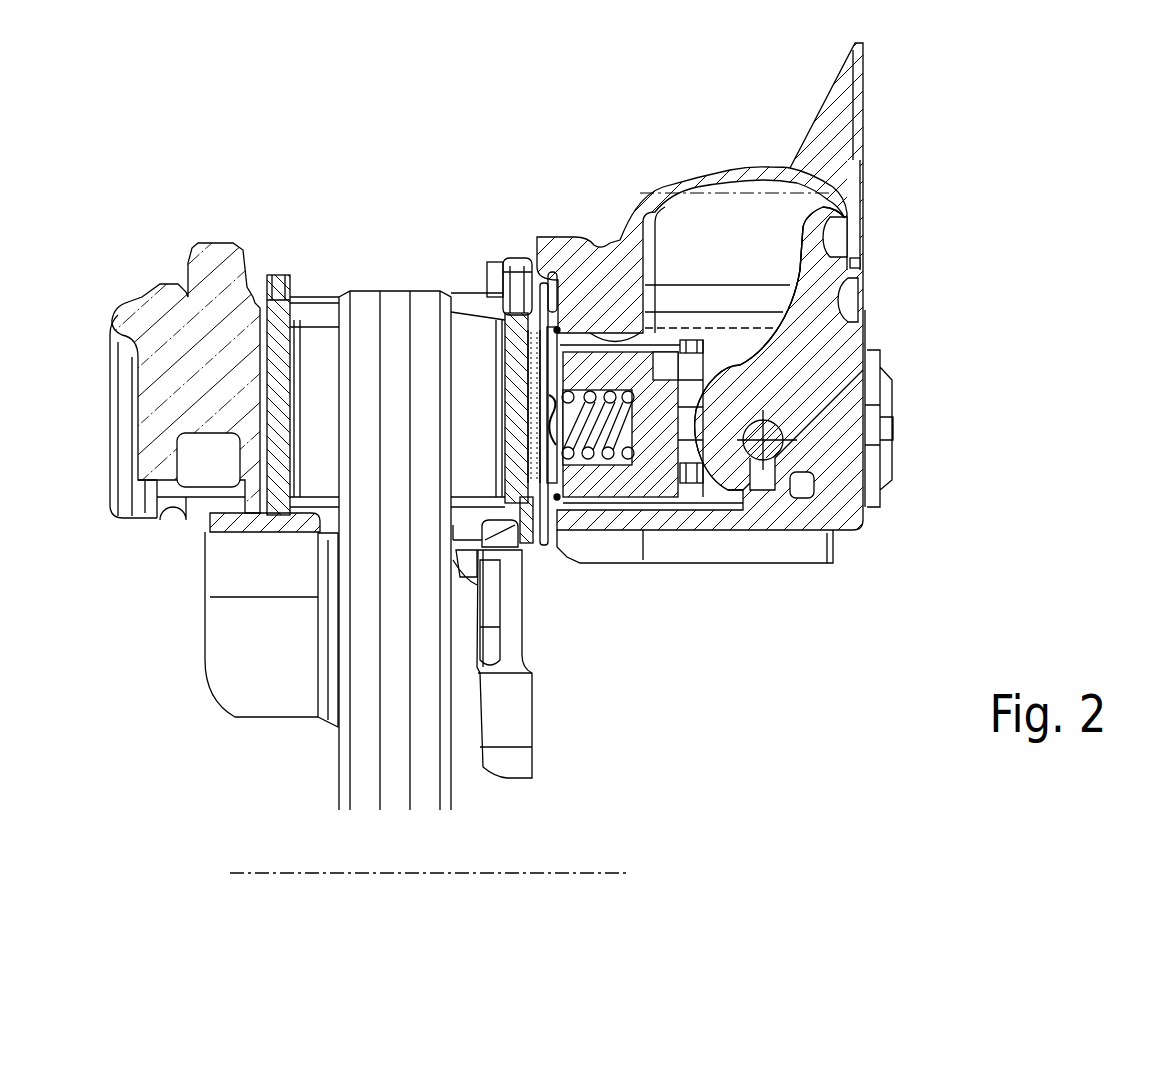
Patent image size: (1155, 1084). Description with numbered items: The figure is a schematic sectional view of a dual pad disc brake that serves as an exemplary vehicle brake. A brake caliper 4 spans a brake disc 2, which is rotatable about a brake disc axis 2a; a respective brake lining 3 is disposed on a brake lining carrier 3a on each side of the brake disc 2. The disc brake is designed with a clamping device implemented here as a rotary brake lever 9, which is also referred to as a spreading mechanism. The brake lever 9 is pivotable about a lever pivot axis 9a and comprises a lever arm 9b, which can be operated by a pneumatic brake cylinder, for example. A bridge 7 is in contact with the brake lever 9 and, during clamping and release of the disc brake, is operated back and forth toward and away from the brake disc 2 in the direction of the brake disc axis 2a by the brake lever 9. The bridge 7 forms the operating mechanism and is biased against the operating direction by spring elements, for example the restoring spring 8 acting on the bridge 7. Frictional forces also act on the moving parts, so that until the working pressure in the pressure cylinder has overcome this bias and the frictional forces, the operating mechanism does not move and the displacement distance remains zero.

The brake disc 2 is at (400, 303).
The brake disc axis 2a is at (583, 872).
The brake lining 3 is at (317, 352).
The brake lining carrier 3a is at (292, 338).
The brake caliper 4 is at (557, 240).
The bridge 7 is at (650, 440).
The restoring spring 8 is at (580, 463).
The brake lever 9 is at (752, 368).
The lever pivot axis 9a is at (775, 455).
The lever arm 9b is at (805, 223).